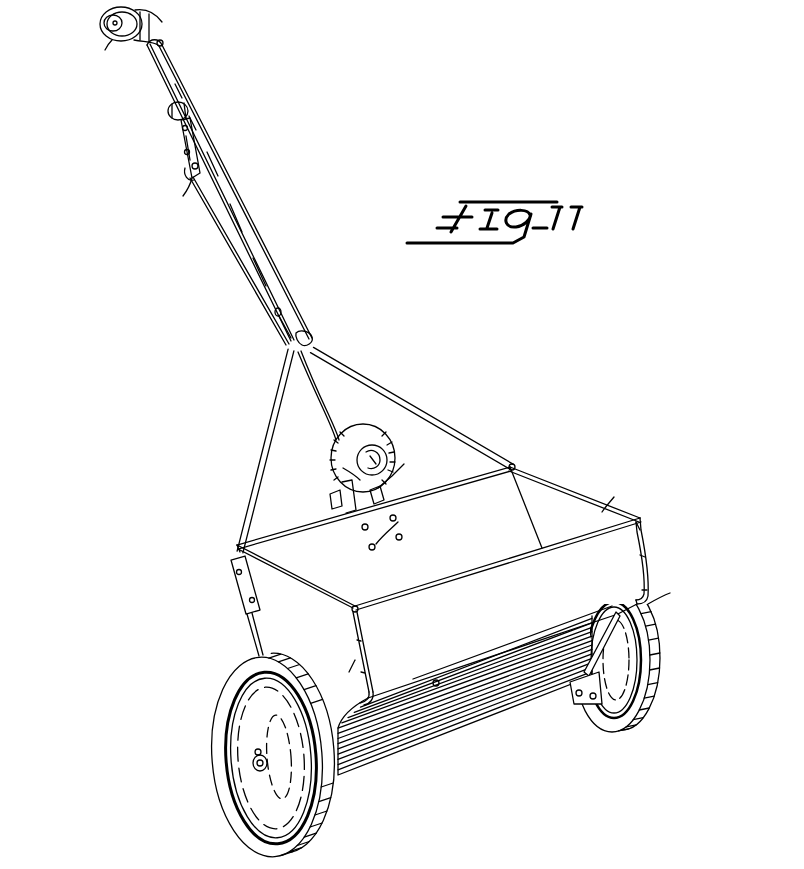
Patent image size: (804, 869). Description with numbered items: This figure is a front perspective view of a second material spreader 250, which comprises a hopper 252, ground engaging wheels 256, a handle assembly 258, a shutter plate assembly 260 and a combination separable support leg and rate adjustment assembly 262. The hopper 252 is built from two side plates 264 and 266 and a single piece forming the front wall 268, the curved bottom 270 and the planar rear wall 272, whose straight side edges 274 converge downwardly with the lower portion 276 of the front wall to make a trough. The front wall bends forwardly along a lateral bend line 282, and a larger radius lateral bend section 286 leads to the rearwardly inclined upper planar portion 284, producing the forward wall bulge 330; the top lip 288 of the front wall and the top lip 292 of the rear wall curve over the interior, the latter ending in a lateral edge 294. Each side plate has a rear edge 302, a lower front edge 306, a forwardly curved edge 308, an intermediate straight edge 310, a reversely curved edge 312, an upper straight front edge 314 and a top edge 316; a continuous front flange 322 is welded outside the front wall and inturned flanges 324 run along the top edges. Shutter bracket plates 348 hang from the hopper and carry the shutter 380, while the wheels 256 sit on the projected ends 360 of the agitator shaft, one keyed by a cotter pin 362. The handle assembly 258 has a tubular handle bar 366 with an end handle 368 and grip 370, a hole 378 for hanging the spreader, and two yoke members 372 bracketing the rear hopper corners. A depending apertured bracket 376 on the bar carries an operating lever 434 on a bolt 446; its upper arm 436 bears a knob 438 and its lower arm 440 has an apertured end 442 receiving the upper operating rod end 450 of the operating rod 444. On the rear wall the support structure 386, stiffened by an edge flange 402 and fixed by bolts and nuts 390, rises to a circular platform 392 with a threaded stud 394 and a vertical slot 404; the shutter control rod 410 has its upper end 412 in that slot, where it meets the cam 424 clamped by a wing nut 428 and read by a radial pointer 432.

The material spreader 250 is at (463, 380).
The hopper 252 is at (519, 488).
The wheels 256 is at (216, 698).
The handle assembly 258 is at (340, 312).
The shutter plate assembly 260 is at (548, 700).
The combination separable support leg and rate adjustment assembly 262 is at (402, 454).
The side plate 264 is at (248, 630).
The side plate 266 is at (623, 496).
The front wall 268 is at (646, 568).
The bottom 270 is at (390, 752).
The rear wall 272 is at (295, 544).
The straight side edges 274 is at (574, 496).
The lower portion of front wall 276 is at (480, 702).
The lateral bend line 282 is at (436, 680).
The upper planar portion 284 is at (508, 616).
The lateral bend section 286 is at (562, 620).
The top lip of front wall 288 is at (450, 582).
The top lip of rear wall 292 is at (460, 488).
The lateral edge 294 is at (455, 498).
The rear edge 302 is at (230, 598).
The lower straight forwardly inclined front edge 306 is at (604, 652).
The forwardly curved edge 308 is at (652, 634).
The intermediate forwardly inclined straight edge 310 is at (348, 722).
The reversely curved edge 312 is at (348, 700).
The rearwardly inclined upper straight front edge 314 is at (650, 570).
The top edge 316 is at (325, 590).
The continuous front flange 322 is at (372, 660).
The inturned flanges 324 is at (348, 602).
The forward wall bulge 330 is at (506, 684).
The shutter bracket plates 348 is at (582, 713).
The projected ends of agitator shaft 360 is at (252, 764).
The cotter pin 362 is at (255, 752).
The tubular handle bar 366 is at (258, 210).
The end handle 368 is at (148, 22).
The grip 370 is at (119, 41).
The yoke members 372 is at (410, 368).
The depending apertured bracket 376 is at (196, 150).
The hole 378 is at (163, 43).
The shutter 380 is at (455, 738).
The support structure 386 is at (330, 498).
The bolts and nuts 390 is at (398, 522).
The circular platform 392 is at (346, 430).
The threaded stud 394 is at (384, 440).
The edge flange 402 is at (342, 502).
The vertical slot 404 is at (384, 492).
The shutter control rod 410 is at (364, 533).
The upper end of control rod 412 is at (404, 470).
The cam 424 is at (332, 455).
The wing nut 428 is at (368, 434).
The radial pointer 432 is at (340, 468).
The operating lever 434 is at (185, 146).
The upper arm 436 is at (182, 129).
The knob 438 is at (167, 111).
The lower arm 440 is at (186, 175).
The apertured end 442 is at (180, 199).
The operating rod 444 is at (228, 257).
The bolt 446 is at (184, 153).
The upper operating rod end 450 is at (198, 165).